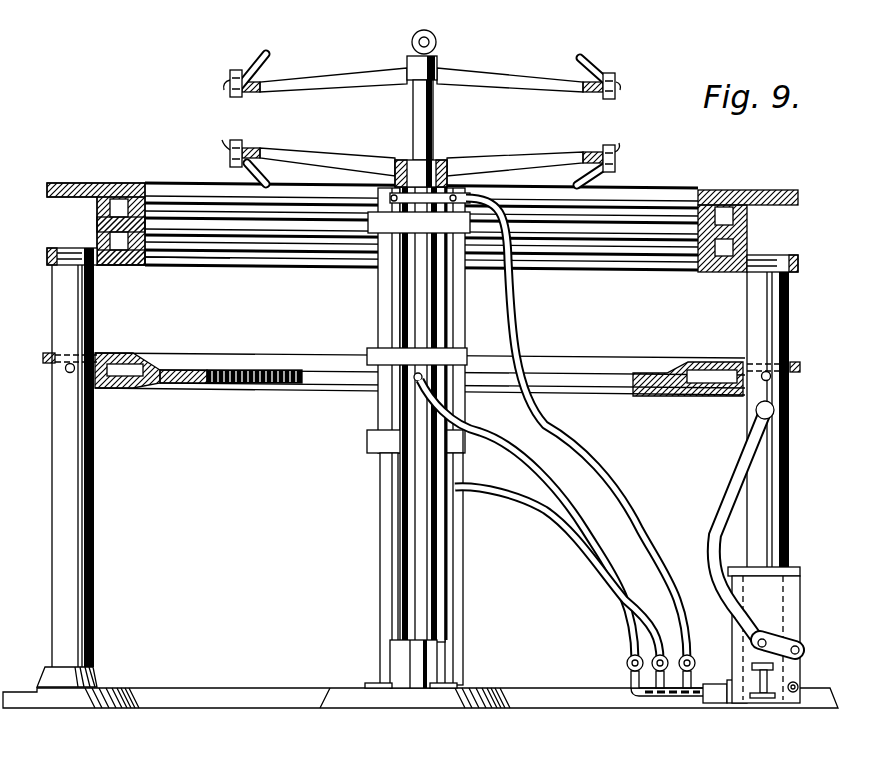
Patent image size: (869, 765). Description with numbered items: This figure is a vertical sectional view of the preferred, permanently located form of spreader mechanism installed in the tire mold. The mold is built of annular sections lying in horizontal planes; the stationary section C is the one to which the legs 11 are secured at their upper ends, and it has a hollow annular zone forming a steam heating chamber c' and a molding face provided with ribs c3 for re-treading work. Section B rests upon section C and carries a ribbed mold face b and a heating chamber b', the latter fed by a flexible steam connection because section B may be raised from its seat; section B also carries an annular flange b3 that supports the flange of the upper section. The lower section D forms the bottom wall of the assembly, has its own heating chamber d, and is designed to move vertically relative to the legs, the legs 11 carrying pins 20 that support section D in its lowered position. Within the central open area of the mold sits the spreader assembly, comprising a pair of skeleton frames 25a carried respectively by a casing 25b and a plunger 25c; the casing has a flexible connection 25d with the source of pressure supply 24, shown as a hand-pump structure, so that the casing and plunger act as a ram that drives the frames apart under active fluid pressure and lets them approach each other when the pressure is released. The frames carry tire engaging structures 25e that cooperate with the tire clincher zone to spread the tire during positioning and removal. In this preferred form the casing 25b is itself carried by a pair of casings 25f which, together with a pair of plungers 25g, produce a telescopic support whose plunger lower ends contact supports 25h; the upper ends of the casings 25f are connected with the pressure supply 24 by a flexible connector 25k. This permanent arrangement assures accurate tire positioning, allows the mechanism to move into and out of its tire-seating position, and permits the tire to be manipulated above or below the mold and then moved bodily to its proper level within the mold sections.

The leg 11 is at (97, 523).
The pin 20 is at (66, 372).
The source of fluid pressure supply 24 is at (773, 582).
The skeleton frame 25a is at (462, 75).
The casing 25b is at (413, 283).
The plunger 25c is at (433, 137).
The flexible connection 25d is at (478, 428).
The tire engaging structure 25e is at (231, 72).
The casing 25f is at (387, 315).
The plunger 25g is at (378, 610).
The support 25h is at (367, 684).
The flexible connector 25k is at (597, 460).
The mold section B is at (100, 183).
The ribbed mold face b is at (421, 212).
The chamber b' is at (121, 206).
The annular flange b3 is at (65, 183).
The mold section C is at (98, 228).
The heating chamber c' is at (121, 272).
The rib c3 is at (193, 247).
The heating chamber d is at (42, 357).
The mold section D is at (187, 384).